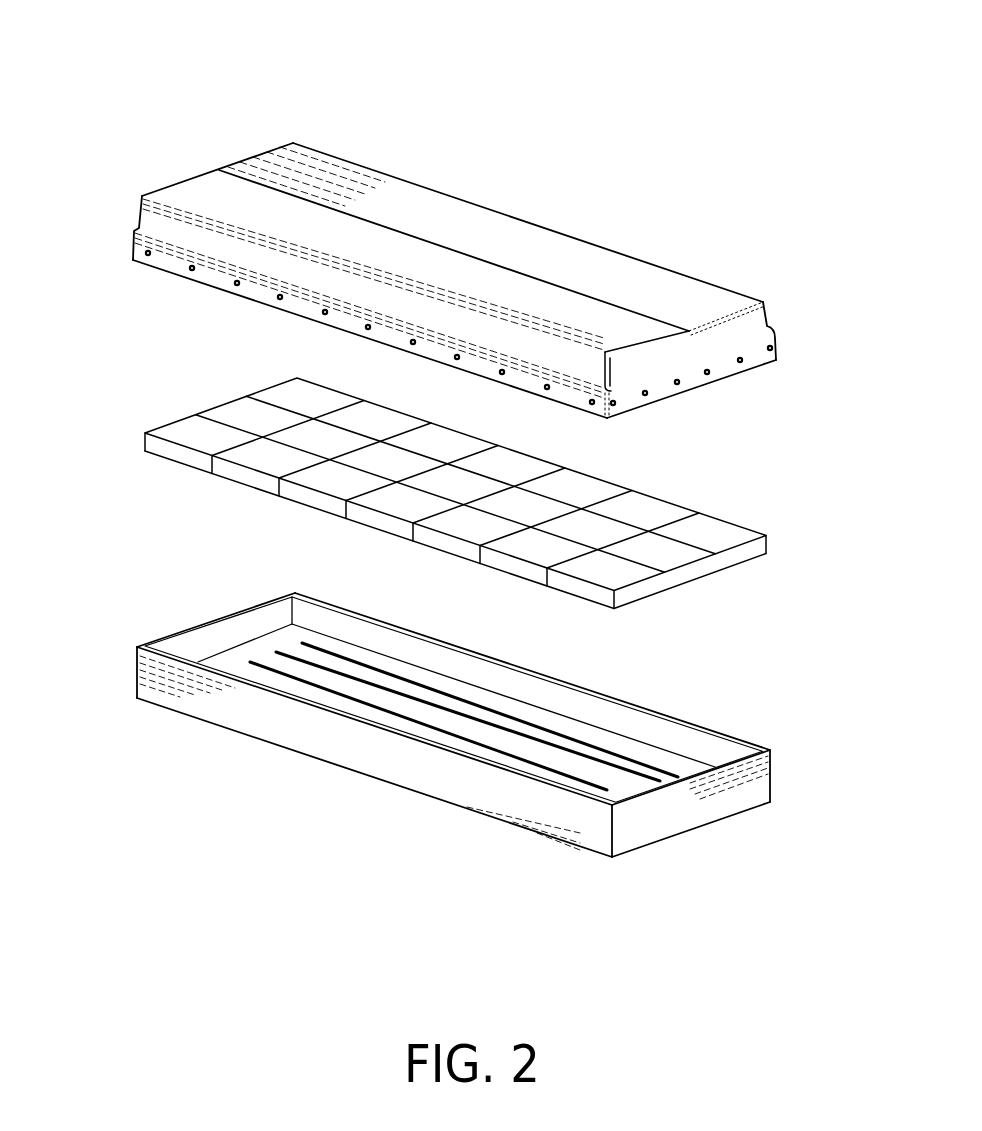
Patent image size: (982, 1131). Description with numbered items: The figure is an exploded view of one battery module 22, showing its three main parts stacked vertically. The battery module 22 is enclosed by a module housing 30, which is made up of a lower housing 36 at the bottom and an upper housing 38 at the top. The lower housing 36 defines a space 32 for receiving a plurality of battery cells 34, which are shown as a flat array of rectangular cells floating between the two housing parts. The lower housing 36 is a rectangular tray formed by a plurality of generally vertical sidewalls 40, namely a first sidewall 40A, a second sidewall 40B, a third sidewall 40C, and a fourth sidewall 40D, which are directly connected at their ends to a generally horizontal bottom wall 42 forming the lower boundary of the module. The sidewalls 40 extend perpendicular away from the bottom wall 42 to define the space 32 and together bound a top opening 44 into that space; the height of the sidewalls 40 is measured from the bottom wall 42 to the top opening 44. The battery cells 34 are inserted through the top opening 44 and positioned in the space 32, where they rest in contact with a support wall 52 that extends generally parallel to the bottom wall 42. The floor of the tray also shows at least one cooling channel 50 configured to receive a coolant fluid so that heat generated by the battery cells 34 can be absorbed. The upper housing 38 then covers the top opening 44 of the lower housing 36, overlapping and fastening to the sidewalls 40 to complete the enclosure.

The battery module 22 is at (146, 113).
The module housing 30 is at (118, 240).
The upper housing 38 is at (782, 312).
The lower housing 36 is at (782, 773).
The battery cells 34 is at (635, 592).
The sidewalls 40 is at (172, 688).
The first sidewall 40A is at (384, 640).
The second sidewall 40B is at (226, 640).
The third sidewall 40C is at (322, 740).
The fourth sidewall 40D is at (685, 818).
The bottom wall 42 is at (544, 836).
The top opening 44 is at (533, 678).
The space 32 is at (718, 752).
The cooling channel 50 is at (622, 750).
The support wall 52 is at (609, 792).